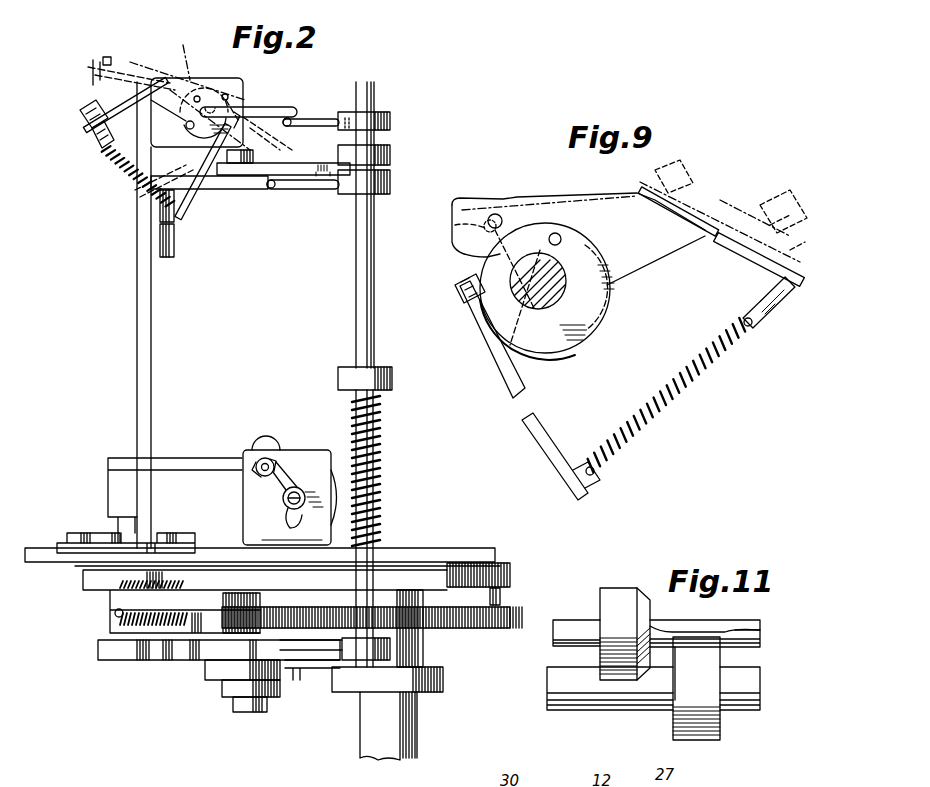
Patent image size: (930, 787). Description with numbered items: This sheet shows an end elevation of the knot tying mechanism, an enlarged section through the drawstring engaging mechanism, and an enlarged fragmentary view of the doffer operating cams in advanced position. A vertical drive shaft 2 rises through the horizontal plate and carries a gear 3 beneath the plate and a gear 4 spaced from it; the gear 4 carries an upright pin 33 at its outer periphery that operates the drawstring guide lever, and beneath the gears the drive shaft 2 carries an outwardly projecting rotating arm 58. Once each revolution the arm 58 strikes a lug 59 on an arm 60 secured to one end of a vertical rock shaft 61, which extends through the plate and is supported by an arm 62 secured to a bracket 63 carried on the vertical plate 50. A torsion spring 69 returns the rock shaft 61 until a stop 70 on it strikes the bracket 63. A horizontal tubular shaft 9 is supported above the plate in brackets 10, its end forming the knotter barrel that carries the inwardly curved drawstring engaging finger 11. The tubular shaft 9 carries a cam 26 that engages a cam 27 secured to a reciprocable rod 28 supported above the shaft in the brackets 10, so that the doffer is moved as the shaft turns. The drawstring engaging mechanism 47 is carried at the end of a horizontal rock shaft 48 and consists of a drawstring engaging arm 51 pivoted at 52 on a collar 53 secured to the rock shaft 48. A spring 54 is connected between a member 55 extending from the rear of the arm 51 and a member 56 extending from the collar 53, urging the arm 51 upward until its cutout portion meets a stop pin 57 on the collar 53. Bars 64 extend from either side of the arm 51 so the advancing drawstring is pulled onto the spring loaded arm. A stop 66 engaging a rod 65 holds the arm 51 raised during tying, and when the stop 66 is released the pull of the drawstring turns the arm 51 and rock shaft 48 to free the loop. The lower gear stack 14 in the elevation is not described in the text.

In FIG. 2, the vertical drive shaft 2 is at (360, 733).
In FIG. 2, the gear 3 is at (497, 564).
In FIG. 2, the gear 4 is at (467, 628).
In FIG. 11, the tubular shaft 9 is at (570, 712).
In FIG. 2, the brackets 10 is at (303, 455).
In FIG. 2, the drawstring engaging finger 11 is at (287, 518).
In FIG. 2, the gear stack 14 is at (240, 705).
In FIG. 11, the cam 26 is at (677, 717).
In FIG. 11, the cam 27 is at (613, 592).
In FIG. 11, the reciprocable rod 28 is at (572, 620).
In FIG. 2, the upright pin 33 is at (502, 598).
In FIG. 2, the drawstring engaging mechanism 47 is at (187, 55).
In FIG. 9, the drawstring engaging mechanism 47 is at (537, 184).
In FIG. 9, the horizontal rock shaft 48 is at (557, 263).
In FIG. 2, the vertical plate 50 is at (137, 345).
In FIG. 2, the drawstring engaging arm 51 is at (238, 86).
In FIG. 9, the drawstring engaging arm 51 is at (468, 202).
In FIG. 9, the pivot 52 is at (560, 236).
In FIG. 9, the collar 53 is at (547, 345).
In FIG. 2, the spring 54 is at (118, 166).
In FIG. 9, the spring 54 is at (673, 407).
In FIG. 2, the member 55 is at (123, 100).
In FIG. 9, the member 55 is at (720, 246).
In FIG. 2, the member 56 is at (190, 205).
In FIG. 9, the member 56 is at (541, 428).
In FIG. 2, the stop pin 57 is at (185, 118).
In FIG. 9, the stop pin 57 is at (607, 308).
In FIG. 2, the rotating arm 58 is at (335, 676).
In FIG. 2, the lug 59 is at (293, 683).
In FIG. 2, the arm 60 is at (318, 658).
In FIG. 2, the vertical rock shaft 61 is at (358, 299).
In FIG. 2, the arm 62 is at (323, 142).
In FIG. 2, the bracket 63 is at (218, 193).
In FIG. 9, the bars 64 is at (488, 222).
In FIG. 2, the rod 65 is at (278, 107).
In FIG. 2, the stop 66 is at (320, 120).
In FIG. 2, the torsion spring 69 is at (382, 421).
In FIG. 2, the stop 70 is at (303, 187).